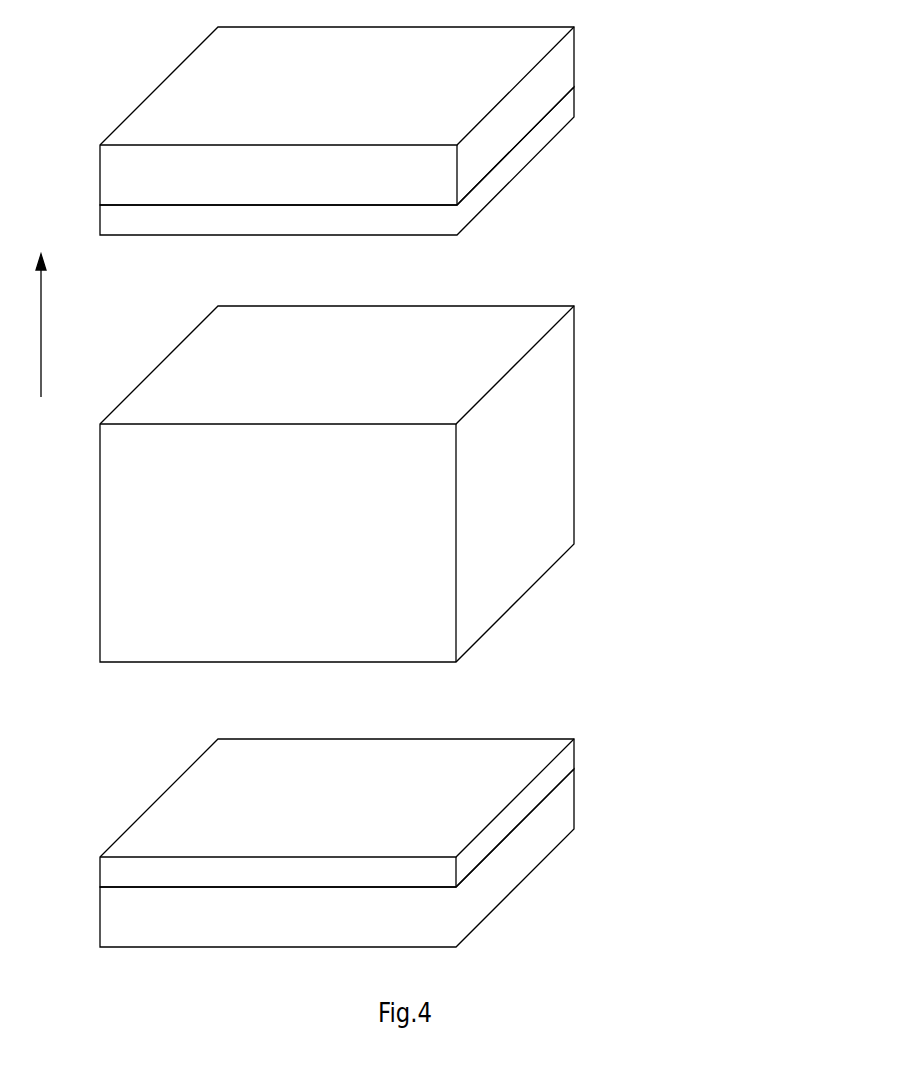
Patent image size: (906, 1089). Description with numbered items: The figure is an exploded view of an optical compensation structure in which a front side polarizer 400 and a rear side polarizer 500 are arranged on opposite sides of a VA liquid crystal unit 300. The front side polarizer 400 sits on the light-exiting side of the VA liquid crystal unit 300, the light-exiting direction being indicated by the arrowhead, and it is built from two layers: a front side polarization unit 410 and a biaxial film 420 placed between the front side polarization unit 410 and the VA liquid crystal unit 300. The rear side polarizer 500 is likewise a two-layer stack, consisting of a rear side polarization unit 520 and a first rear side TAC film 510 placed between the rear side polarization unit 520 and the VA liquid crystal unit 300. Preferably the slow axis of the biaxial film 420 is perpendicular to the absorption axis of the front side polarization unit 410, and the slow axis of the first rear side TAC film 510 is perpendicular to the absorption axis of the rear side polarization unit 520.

The VA liquid crystal unit 300 is at (545, 472).
The front side polarizer 400 is at (446, 131).
The front side polarization unit 410 is at (545, 75).
The biaxial film 420 is at (563, 111).
The rear side polarizer 500 is at (442, 837).
The first rear side TAC film 510 is at (563, 763).
The rear side polarization unit 520 is at (563, 827).